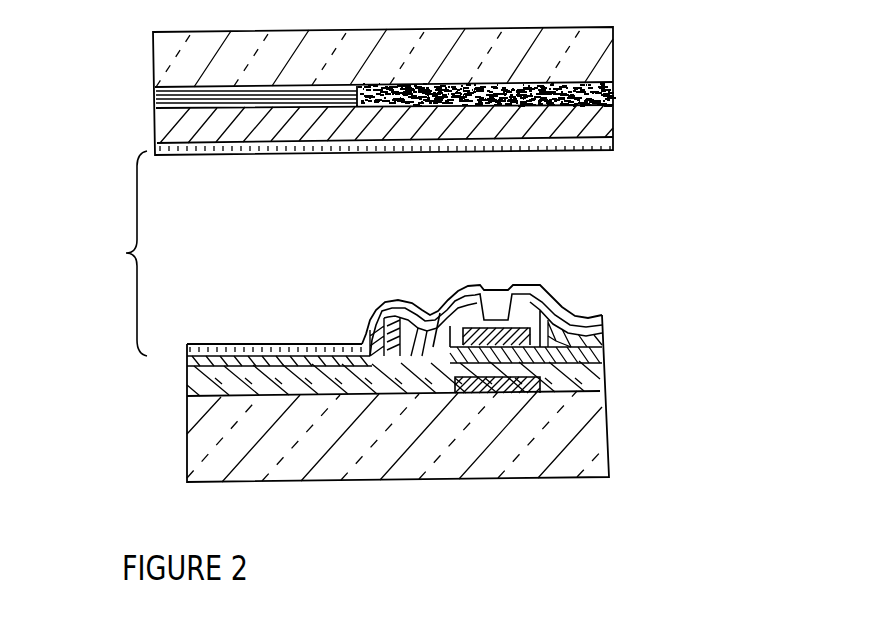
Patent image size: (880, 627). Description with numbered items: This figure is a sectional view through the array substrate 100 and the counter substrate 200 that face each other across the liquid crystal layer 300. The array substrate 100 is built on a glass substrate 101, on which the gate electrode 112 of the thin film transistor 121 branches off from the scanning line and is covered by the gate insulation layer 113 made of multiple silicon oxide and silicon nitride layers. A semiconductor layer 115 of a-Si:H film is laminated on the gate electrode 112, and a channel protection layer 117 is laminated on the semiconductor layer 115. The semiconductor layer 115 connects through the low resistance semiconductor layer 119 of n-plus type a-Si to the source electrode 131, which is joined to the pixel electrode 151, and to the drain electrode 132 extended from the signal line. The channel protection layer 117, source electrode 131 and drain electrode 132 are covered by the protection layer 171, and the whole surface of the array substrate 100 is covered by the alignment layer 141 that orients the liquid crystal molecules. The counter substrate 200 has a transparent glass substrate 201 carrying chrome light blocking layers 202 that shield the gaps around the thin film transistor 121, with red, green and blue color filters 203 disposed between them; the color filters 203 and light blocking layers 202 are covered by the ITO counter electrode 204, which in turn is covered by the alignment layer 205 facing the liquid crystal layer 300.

The array substrate 100 is at (384, 346).
The glass substrate 101 is at (604, 436).
The gate electrode 112 is at (494, 395).
The gate insulation layer 113 is at (593, 378).
The semiconductor layer 115 is at (559, 322).
The channel protection layer 117 is at (541, 308).
The low resistance semiconductor layer 119 is at (436, 308).
The thin film transistor 121 is at (497, 285).
The source electrode 131 is at (372, 325).
The drain electrode 132 is at (603, 337).
The alignment layer 141 is at (250, 346).
The pixel electrode 151 is at (187, 344).
The protection layer 171 is at (584, 316).
The counter substrate 200 is at (405, 94).
The glass substrate 201 is at (155, 63).
The light blocking layer 202 is at (613, 90).
The color filter 203 is at (155, 108).
The counter electrode 204 is at (612, 120).
The alignment layer 205 is at (612, 146).
The liquid crystal layer 300 is at (104, 253).